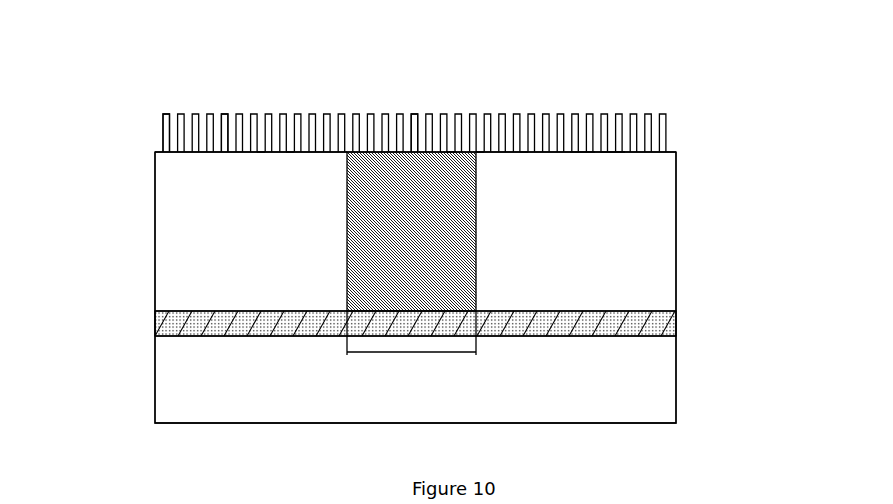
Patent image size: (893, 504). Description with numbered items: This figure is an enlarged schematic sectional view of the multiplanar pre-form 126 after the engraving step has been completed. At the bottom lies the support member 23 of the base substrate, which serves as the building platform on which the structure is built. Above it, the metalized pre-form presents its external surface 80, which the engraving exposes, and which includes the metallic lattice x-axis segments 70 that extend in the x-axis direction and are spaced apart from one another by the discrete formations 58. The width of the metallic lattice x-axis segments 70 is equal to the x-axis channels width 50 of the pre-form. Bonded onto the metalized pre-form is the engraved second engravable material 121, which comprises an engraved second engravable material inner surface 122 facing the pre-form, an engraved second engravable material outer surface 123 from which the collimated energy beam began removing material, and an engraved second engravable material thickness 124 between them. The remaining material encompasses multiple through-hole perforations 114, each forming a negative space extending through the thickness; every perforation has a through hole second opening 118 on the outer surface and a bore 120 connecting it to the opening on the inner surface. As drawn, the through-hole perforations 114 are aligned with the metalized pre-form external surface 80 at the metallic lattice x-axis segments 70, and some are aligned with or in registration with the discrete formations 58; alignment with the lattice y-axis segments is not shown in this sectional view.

The support member 23 is at (685, 310).
The x-axis channels width 50 is at (411, 346).
The discrete formations 58 is at (253, 263).
The metallic lattice x-axis segments 70 is at (423, 260).
The metalized pre-form external surface 80 is at (582, 153).
The through-hole perforations 114 is at (523, 115).
The through hole second opening 118 is at (415, 113).
The bore 120 is at (290, 113).
The engraved second engravable material 121 is at (193, 122).
The engraved second engravable material inner surface 122 is at (232, 153).
The engraved second engravable material outer surface 123 is at (223, 113).
The engraved second engravable material thickness 124 is at (690, 116).
The multiplanar pre-form 126 is at (727, 90).